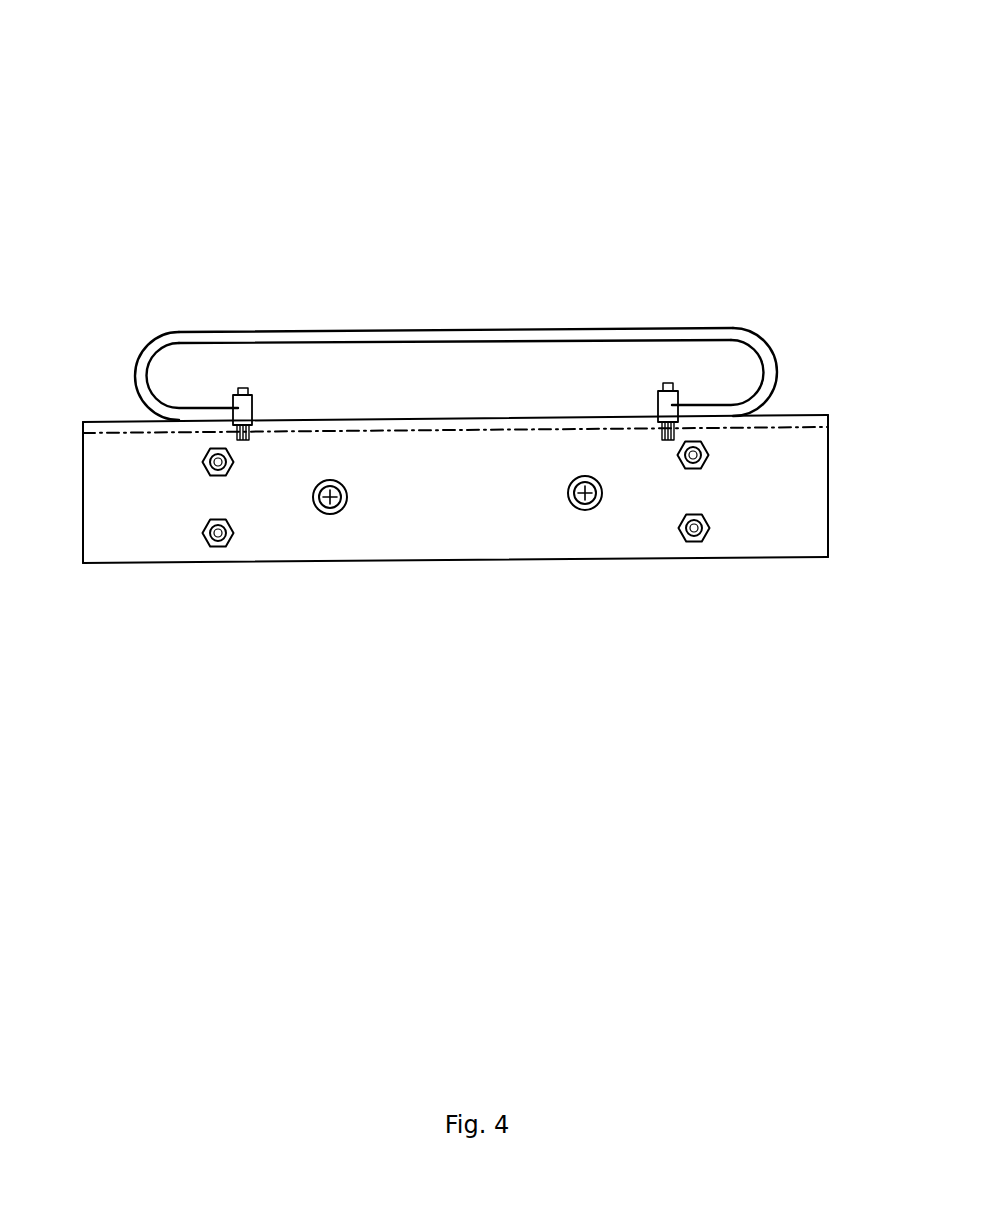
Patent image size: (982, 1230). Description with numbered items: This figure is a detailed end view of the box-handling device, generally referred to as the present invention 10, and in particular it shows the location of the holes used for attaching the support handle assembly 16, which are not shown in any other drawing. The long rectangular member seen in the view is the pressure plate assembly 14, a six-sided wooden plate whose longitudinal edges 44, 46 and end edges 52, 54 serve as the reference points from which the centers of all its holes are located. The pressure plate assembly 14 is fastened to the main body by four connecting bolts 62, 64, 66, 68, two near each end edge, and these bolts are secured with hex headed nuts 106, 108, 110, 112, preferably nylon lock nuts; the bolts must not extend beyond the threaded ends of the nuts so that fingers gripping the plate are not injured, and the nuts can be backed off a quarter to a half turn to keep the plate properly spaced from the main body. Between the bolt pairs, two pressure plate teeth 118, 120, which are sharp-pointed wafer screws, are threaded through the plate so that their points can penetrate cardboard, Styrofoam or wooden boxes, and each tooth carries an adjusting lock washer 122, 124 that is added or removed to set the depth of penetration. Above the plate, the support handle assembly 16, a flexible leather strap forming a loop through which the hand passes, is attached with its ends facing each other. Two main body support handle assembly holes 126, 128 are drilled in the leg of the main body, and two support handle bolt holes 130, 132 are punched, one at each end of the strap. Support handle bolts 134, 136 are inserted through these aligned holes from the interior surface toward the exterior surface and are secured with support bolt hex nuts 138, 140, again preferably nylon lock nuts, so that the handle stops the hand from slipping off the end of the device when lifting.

The present invention 10 is at (241, 86).
The pressure plate assembly 14 is at (833, 170).
The support handle assembly 16 is at (496, 155).
The pressure plate longitudinal edge 44 is at (456, 560).
The pressure plate longitudinal edge 46 is at (456, 422).
The pressure plate end edge 52 is at (846, 432).
The pressure plate end edge 54 is at (61, 455).
The connecting bolt 62 is at (232, 533).
The connecting bolt 64 is at (711, 530).
The connecting bolt 66 is at (218, 537).
The connecting bolt 68 is at (697, 532).
The hex headed nut 106 is at (744, 529).
The hex headed nut 108 is at (165, 544).
The hex headed nut 110 is at (661, 578).
The hex headed nut 112 is at (188, 574).
The pressure plate tooth 118 is at (551, 559).
The pressure plate tooth 120 is at (363, 560).
The adjusting lock washer 122 is at (585, 493).
The adjusting lock washer 124 is at (330, 497).
The main body support handle assembly hole 126 is at (661, 351).
The main body support handle assembly hole 128 is at (305, 360).
The support handle bolt hole 130 is at (226, 346).
The support handle bolt hole 132 is at (643, 358).
The support handle bolt 134 is at (680, 433).
The support handle bolt 136 is at (240, 440).
The support bolt hex nut 138 is at (677, 403).
The support bolt hex nut 140 is at (245, 393).